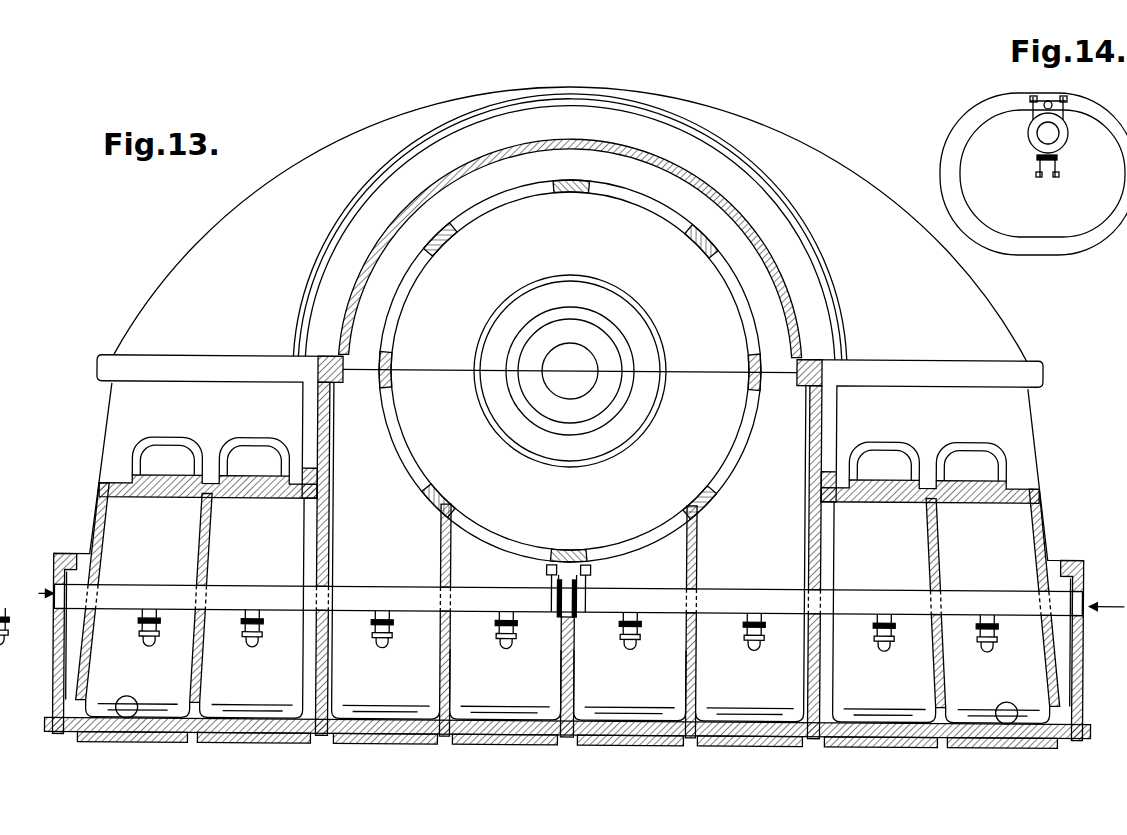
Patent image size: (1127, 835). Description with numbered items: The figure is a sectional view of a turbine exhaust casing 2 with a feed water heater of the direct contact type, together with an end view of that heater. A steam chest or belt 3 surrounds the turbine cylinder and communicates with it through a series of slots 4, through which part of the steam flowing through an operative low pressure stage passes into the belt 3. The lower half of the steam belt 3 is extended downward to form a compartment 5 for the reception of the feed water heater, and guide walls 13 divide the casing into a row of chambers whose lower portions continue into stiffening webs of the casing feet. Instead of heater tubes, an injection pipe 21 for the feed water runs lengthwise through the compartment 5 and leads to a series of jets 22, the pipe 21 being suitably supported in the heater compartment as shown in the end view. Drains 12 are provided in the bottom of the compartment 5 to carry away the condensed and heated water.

In FIG. 13, the exhaust casing 2 is at (320, 160).
In FIG. 13, the steam chest or belt 3 is at (571, 248).
In FIG. 13, the slots 4 is at (486, 212).
In FIG. 13, the compartment 5 is at (531, 693).
In FIG. 13, the drains 12 is at (130, 719).
In FIG. 13, the guide walls 13 is at (205, 562).
In FIG. 13, the injection pipe 21 is at (160, 588).
In FIG. 14, the injection pipe 21 is at (1043, 137).
In FIG. 13, the jets 22 is at (151, 646).
In FIG. 14, the jets 22 is at (1043, 173).